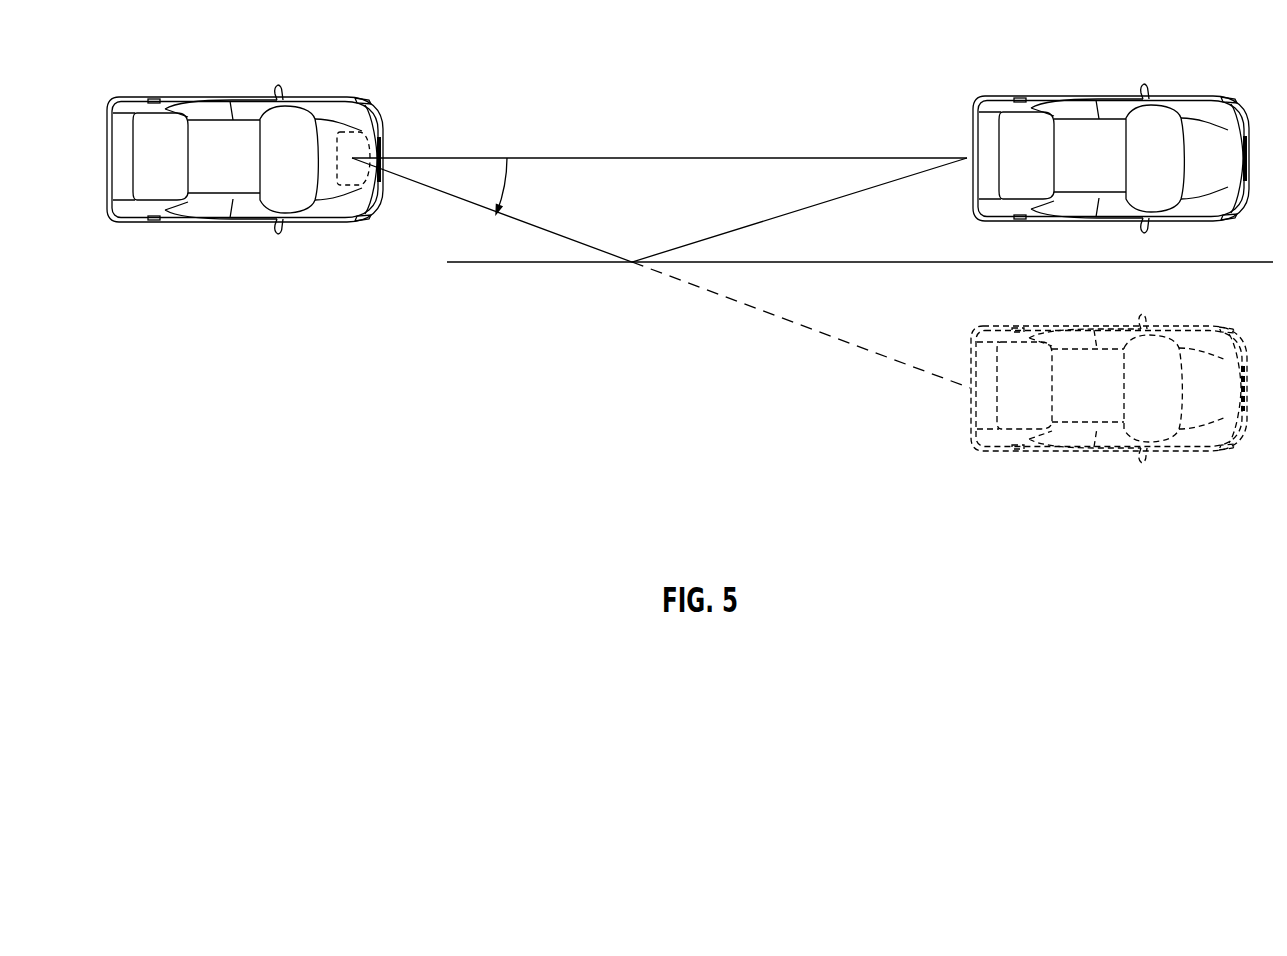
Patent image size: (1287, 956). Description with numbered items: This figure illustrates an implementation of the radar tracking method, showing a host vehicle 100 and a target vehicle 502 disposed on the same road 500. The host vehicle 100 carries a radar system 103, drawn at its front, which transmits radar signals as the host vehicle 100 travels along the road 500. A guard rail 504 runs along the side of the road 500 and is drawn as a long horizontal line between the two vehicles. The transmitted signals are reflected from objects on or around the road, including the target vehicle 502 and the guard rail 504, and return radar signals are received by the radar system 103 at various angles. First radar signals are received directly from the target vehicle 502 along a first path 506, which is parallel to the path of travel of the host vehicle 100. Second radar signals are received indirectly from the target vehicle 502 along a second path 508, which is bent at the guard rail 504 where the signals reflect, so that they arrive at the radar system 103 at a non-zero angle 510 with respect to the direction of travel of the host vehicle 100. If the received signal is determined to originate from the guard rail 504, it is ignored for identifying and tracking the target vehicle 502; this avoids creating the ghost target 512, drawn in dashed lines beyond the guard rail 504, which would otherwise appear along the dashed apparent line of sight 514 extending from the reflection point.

The host vehicle 100 is at (328, 96).
The radar system 103 is at (366, 131).
The road 500 is at (917, 235).
The target vehicle 502 is at (1191, 95).
The guard rail 504 is at (485, 263).
The first path 506 is at (811, 158).
The second path 508 is at (843, 196).
The non-zero angle 510 is at (507, 181).
The ghost target 512 is at (1193, 453).
The apparent path to ghost target 514 is at (868, 351).